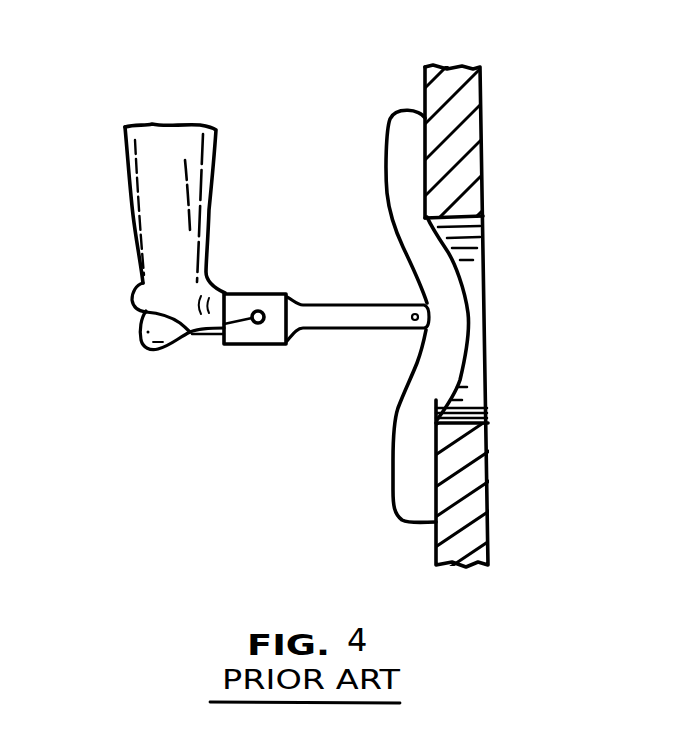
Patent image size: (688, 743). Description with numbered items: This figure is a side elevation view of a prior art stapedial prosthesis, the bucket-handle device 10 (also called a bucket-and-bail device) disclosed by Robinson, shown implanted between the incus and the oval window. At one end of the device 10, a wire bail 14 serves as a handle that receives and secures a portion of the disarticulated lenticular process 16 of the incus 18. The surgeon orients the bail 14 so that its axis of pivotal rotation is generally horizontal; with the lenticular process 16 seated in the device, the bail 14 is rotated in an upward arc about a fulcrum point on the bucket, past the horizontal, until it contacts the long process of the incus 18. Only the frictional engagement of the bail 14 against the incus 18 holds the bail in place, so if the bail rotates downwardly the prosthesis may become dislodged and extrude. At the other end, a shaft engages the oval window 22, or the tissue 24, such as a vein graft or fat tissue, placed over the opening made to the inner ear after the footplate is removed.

The bucket-handle device 10 is at (307, 281).
The wire bail 14 is at (133, 302).
The lenticular process 16 is at (211, 337).
The incus 18 is at (153, 150).
The oval window 22 is at (497, 340).
The tissue 24 is at (408, 418).